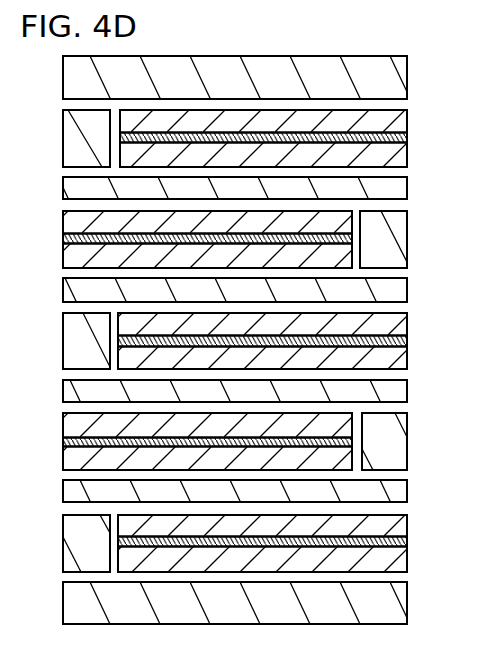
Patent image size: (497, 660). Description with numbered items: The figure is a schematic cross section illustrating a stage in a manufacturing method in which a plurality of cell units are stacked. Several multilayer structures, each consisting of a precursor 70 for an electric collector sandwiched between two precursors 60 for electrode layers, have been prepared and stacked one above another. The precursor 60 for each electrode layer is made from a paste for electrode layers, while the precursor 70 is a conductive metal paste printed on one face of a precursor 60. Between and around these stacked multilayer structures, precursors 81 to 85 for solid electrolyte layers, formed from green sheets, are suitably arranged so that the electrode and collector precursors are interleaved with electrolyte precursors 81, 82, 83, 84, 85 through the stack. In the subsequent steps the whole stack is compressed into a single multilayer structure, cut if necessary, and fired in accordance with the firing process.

The precursor for an electrode layer 60 is at (397, 120).
The precursor for an electric collector 70 is at (407, 135).
The precursor for a solid electrolyte layer 81 is at (395, 77).
The precursor for a solid electrolyte layer 82 is at (395, 185).
The precursor for a solid electrolyte layer 83 is at (395, 282).
The precursor for a solid electrolyte layer 84 is at (395, 432).
The precursor for a solid electrolyte layer 85 is at (395, 602).